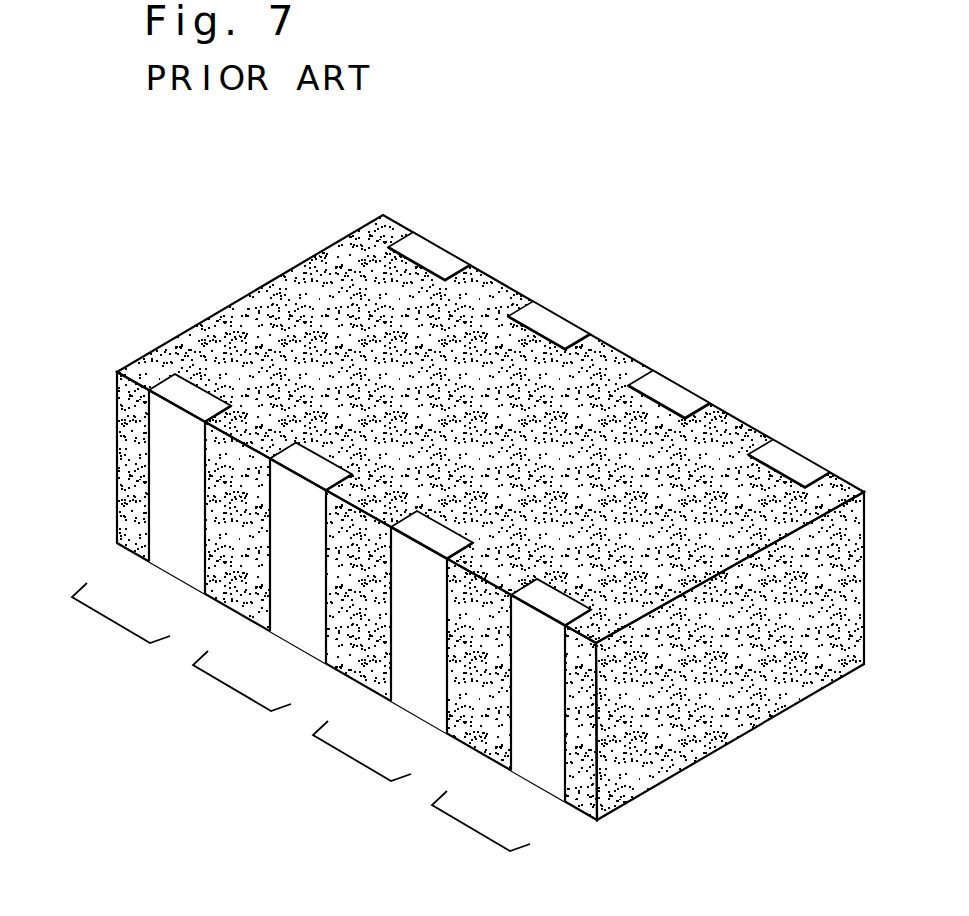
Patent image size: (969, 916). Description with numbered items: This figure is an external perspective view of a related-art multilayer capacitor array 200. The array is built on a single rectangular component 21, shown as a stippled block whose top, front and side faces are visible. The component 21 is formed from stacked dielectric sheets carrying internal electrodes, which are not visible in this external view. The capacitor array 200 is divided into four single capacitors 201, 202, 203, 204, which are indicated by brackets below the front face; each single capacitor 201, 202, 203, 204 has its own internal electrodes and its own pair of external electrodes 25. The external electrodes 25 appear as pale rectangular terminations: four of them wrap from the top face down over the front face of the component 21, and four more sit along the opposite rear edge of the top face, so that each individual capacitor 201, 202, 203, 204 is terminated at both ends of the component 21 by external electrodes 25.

The multilayer capacitor array 200 is at (490, 513).
The component 21 is at (273, 300).
The external electrodes 25 is at (423, 243).
The single capacitor 201 is at (112, 622).
The single capacitor 202 is at (220, 693).
The single capacitor 203 is at (340, 763).
The single capacitor 204 is at (459, 833).